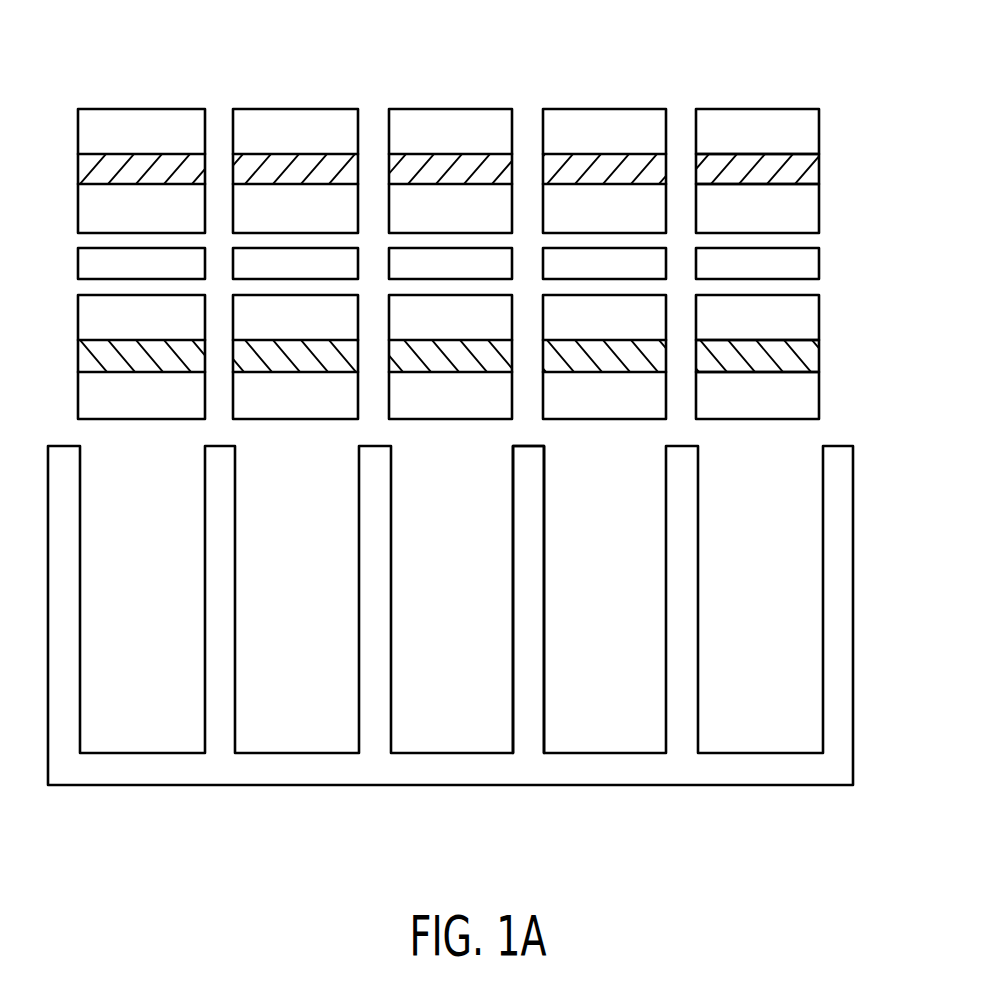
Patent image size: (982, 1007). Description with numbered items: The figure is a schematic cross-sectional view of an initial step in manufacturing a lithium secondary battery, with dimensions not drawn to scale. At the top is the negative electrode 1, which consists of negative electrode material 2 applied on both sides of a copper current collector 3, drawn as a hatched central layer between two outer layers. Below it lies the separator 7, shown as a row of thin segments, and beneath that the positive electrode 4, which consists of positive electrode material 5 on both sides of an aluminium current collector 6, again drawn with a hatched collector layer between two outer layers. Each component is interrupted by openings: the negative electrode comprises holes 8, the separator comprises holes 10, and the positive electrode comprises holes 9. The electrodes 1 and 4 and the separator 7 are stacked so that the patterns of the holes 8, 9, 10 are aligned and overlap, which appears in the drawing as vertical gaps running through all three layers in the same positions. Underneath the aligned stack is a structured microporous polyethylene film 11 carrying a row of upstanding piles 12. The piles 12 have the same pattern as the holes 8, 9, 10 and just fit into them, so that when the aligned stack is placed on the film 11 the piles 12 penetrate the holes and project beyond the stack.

The negative electrode 1 is at (479, 170).
The negative electrode material 2 is at (810, 133).
The copper current collector 3 is at (780, 168).
The positive electrode 4 is at (480, 356).
The positive electrode material 5 is at (810, 318).
The aluminium current collector 6 is at (770, 356).
The separator 7 is at (810, 263).
The holes 8 is at (524, 115).
The holes 9 is at (527, 315).
The holes 10 is at (526, 253).
The structured microporous polyethylene film 11 is at (822, 772).
The piles 12 is at (533, 533).